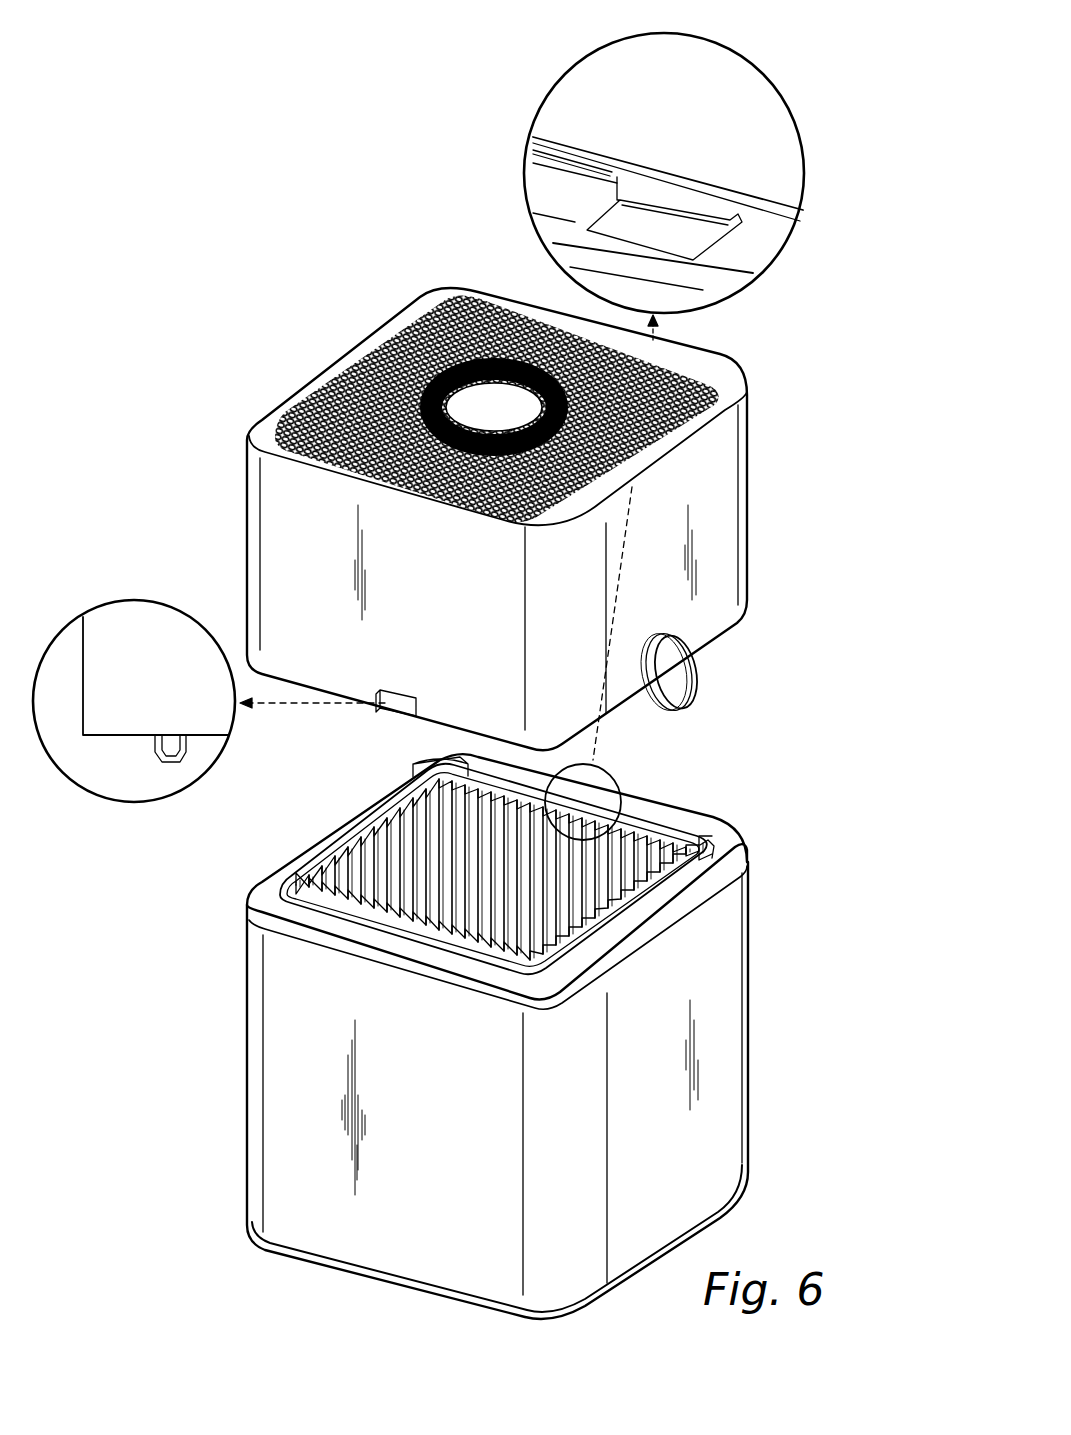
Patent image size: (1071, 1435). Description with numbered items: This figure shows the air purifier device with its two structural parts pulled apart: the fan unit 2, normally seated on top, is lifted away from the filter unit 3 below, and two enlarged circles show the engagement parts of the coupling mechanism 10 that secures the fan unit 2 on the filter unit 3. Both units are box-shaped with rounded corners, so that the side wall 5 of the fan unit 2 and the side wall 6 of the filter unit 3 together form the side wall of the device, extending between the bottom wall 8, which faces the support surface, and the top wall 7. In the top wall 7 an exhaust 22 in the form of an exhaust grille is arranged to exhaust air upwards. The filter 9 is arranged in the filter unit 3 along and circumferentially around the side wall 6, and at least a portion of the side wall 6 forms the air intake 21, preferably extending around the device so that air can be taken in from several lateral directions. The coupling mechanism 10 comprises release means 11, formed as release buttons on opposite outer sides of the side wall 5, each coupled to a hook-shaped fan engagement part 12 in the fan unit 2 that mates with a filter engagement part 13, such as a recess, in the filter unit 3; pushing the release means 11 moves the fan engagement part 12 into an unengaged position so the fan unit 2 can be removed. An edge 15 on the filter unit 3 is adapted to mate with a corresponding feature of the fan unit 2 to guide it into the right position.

The fan unit 2 is at (762, 466).
The filter unit 3 is at (480, 1055).
The side wall of the fan unit 5 is at (283, 558).
The side wall of the filter unit 6 is at (283, 1070).
The top wall 7 is at (497, 359).
The bottom wall 8 is at (382, 1283).
The filter 9 is at (380, 873).
The coupling mechanism 10 is at (435, 478).
The release means 11 is at (393, 705).
The fan engagement part 12 is at (172, 762).
The filter engagement part 13 is at (613, 200).
The edge 15 is at (643, 910).
The air intake 21 is at (298, 1183).
The exhaust 22 is at (413, 313).